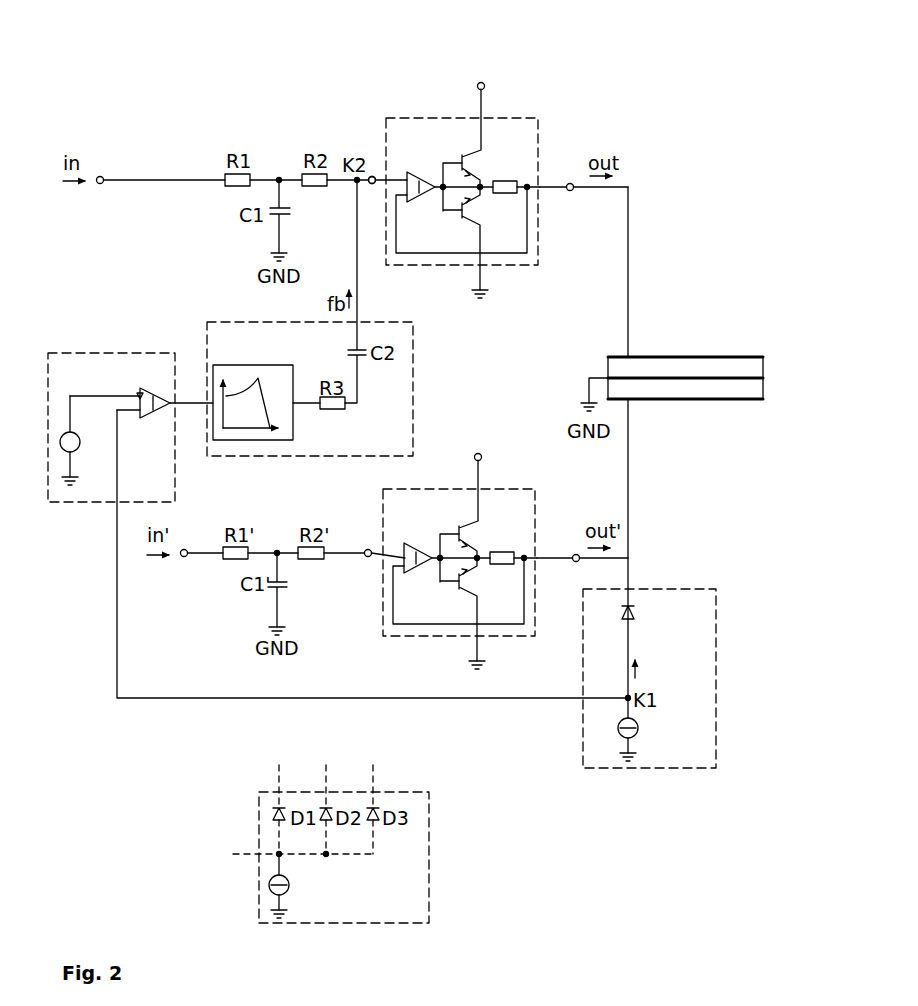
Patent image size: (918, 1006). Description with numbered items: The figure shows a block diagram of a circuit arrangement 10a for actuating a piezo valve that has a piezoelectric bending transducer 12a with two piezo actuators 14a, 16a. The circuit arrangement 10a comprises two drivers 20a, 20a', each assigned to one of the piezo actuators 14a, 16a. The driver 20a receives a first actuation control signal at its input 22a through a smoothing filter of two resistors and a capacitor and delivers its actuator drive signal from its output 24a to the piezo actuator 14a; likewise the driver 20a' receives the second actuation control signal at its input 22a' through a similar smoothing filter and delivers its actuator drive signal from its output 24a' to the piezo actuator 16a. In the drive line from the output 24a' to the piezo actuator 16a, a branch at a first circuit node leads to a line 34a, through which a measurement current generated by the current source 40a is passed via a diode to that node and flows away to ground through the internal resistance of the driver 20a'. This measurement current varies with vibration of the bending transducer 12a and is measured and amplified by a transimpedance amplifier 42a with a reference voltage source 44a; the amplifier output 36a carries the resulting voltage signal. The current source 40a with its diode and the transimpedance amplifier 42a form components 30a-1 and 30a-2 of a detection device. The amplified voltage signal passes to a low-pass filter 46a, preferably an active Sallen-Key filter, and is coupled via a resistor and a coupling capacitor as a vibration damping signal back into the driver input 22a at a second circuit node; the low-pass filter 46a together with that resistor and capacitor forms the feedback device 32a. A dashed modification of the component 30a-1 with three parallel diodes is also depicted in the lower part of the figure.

The circuit arrangement 10a is at (223, 62).
The piezoelectric bending transducer 12a is at (686, 343).
The piezo actuator 14a is at (737, 367).
The piezo actuator 16a is at (737, 390).
The driver 20a is at (471, 179).
The driver 20a' is at (467, 550).
The input 22a is at (358, 145).
The input 22a' is at (357, 519).
The output 24a is at (584, 159).
The output 24a' is at (582, 528).
The component of the detection device 30a-1 is at (580, 740).
The component of the detection device 30a-2 is at (93, 502).
The feedback device 32a is at (413, 395).
The line 34a is at (628, 642).
The comparator output 36a is at (196, 402).
The current source 40a is at (638, 733).
The transimpedance amplifier 42a is at (120, 386).
The reference voltage source 44a is at (78, 447).
The low-pass filter 46a is at (293, 417).